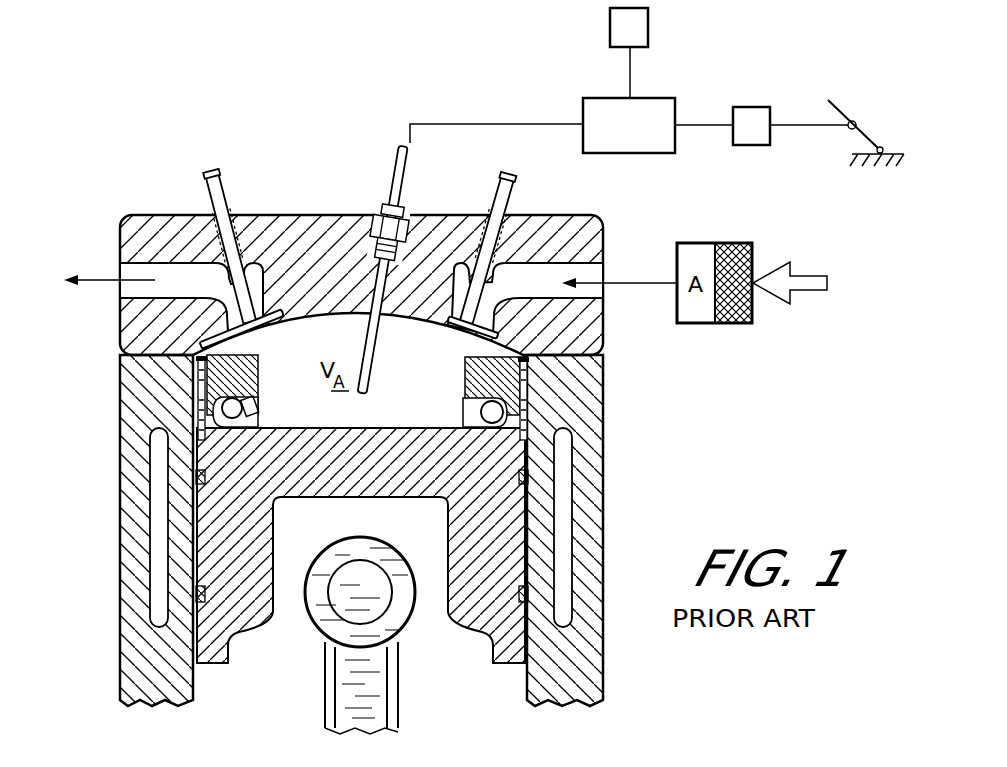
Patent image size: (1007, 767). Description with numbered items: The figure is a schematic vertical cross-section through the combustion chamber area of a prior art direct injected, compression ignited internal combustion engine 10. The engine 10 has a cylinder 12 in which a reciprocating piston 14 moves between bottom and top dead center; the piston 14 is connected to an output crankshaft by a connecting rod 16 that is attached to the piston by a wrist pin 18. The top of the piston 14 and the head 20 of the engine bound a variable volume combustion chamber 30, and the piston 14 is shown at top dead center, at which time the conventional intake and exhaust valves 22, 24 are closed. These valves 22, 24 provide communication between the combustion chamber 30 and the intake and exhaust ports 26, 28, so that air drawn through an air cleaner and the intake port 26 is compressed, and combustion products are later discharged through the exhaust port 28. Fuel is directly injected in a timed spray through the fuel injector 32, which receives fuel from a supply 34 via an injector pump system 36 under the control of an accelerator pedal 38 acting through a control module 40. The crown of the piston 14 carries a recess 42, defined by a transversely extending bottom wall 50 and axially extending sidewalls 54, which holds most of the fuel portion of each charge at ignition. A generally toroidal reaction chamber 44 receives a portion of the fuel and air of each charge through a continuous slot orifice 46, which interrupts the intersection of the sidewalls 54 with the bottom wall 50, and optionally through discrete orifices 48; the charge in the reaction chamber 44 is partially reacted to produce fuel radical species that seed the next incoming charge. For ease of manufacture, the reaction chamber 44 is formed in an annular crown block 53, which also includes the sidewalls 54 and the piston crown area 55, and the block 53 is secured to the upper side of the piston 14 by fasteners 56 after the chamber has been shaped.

The internal combustion engine 10 is at (628, 437).
The cylinder 12 is at (528, 682).
The piston 14 is at (242, 645).
The connecting rod 16 is at (327, 693).
The wrist pin 18 is at (353, 572).
The head 20 is at (606, 353).
The intake valve 22 is at (450, 330).
The exhaust valve 24 is at (247, 330).
The intake port 26 is at (606, 275).
The exhaust port 28 is at (120, 266).
The combustion chamber 30 is at (357, 353).
The fuel injector 32 is at (368, 373).
The fuel supply 34 is at (648, 20).
The injector pump system 36 is at (590, 98).
The accelerator pedal 38 is at (832, 100).
The control module 40 is at (760, 107).
The recess 42 is at (335, 402).
The reaction chamber 44 is at (225, 410).
The continuous slot orifice 46 is at (470, 423).
The discrete orifices 48 is at (252, 393).
The bottom wall 50 is at (367, 430).
The annular crown block 53 is at (530, 378).
The sidewalls 54 is at (460, 380).
The piston crown area 55 is at (527, 357).
The fasteners 56 is at (200, 368).